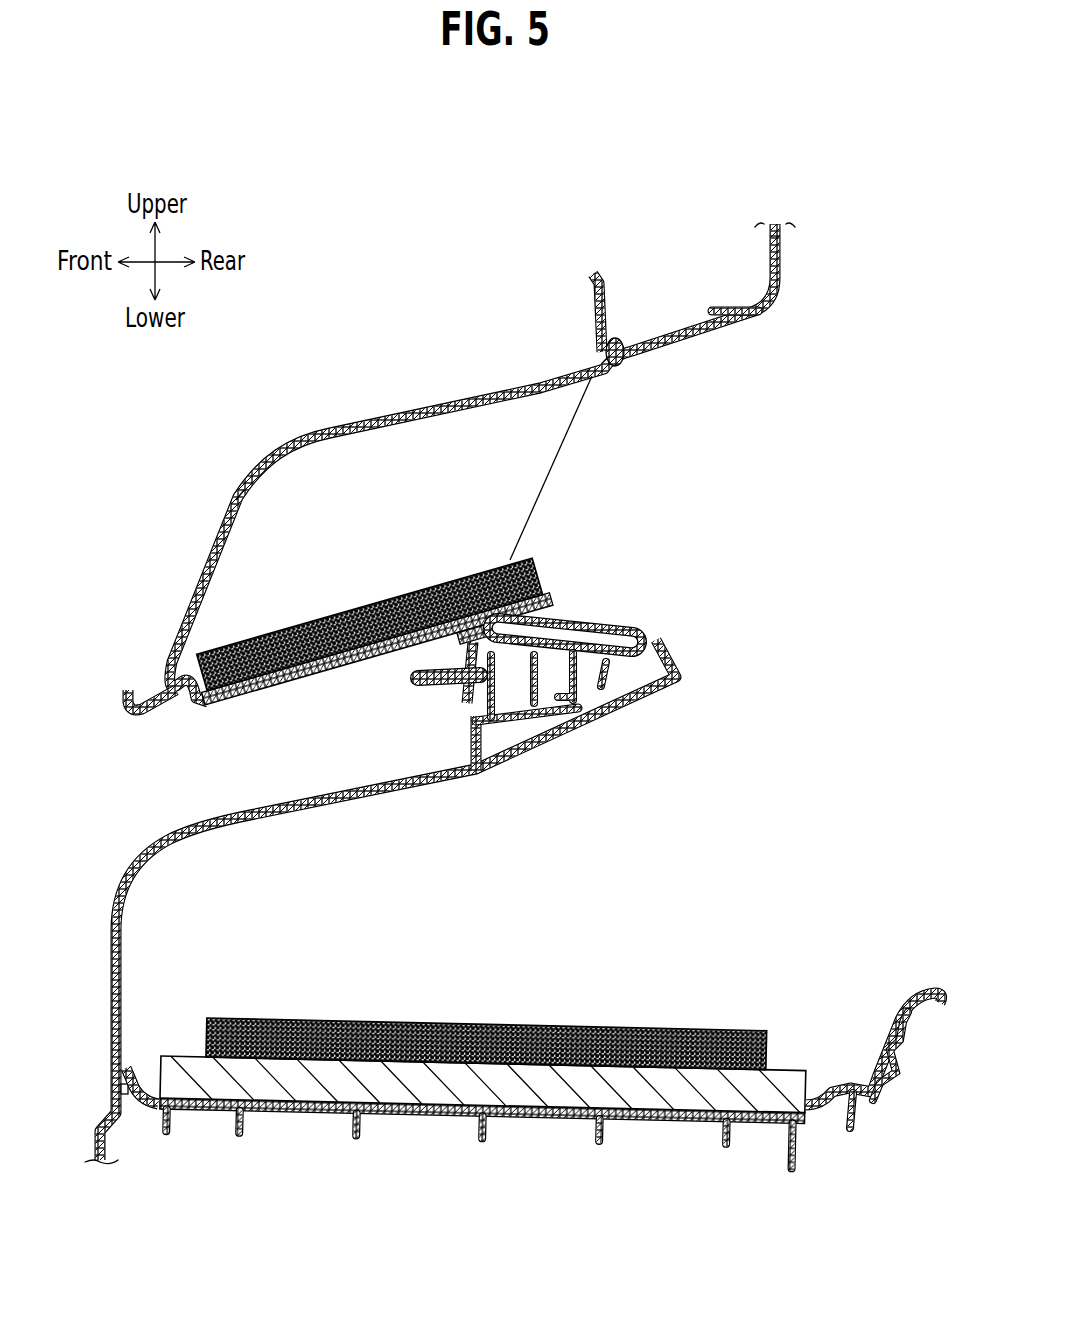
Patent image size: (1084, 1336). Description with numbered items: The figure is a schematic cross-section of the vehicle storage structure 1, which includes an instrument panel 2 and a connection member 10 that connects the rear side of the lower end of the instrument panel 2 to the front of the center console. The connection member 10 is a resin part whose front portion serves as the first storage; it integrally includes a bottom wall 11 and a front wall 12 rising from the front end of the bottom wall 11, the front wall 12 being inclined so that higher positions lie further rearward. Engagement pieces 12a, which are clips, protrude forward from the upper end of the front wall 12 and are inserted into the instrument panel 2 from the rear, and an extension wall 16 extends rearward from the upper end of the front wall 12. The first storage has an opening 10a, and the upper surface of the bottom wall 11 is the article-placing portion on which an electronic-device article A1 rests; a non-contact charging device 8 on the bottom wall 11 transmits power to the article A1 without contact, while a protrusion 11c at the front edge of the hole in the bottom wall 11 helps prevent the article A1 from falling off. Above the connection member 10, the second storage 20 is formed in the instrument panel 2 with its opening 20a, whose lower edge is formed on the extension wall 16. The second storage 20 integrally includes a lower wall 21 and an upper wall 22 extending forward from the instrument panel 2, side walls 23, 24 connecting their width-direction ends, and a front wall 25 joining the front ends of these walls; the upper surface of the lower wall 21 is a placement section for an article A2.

The vehicle storage structure 1 is at (836, 264).
The instrument panel 2 is at (773, 312).
The non-contact charging device 8 is at (782, 1090).
The connection member 10 is at (504, 921).
The opening 10a is at (504, 921).
The bottom wall 11 is at (519, 1122).
The protrusion 11c is at (934, 990).
The front wall 12 is at (110, 967).
The engagement piece 12a is at (418, 677).
The extension wall 16 is at (608, 617).
The second storage 20 is at (503, 480).
The opening 20a is at (503, 480).
The lower wall 21 is at (295, 687).
The upper wall 22 is at (433, 405).
The side wall 23 is at (568, 468).
The side wall 24 is at (485, 480).
The front wall 25 is at (198, 582).
The article A1 is at (498, 1040).
The article A2 is at (529, 575).